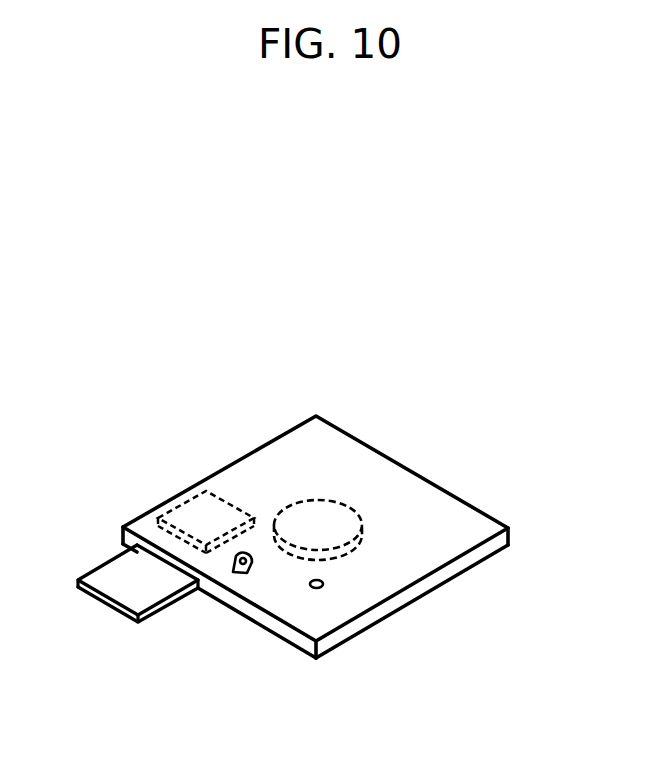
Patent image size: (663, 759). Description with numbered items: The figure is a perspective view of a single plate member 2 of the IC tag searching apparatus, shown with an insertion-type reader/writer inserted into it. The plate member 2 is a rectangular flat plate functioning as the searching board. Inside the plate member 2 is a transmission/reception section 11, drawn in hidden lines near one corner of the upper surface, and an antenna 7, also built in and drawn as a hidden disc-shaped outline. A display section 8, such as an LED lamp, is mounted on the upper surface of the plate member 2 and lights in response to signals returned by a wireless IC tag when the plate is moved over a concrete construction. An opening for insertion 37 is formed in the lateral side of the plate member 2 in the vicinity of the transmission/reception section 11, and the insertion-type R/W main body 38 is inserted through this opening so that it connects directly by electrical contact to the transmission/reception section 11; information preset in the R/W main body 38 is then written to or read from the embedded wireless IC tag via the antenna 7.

The flat plate member 2 is at (290, 453).
The transmission/reception section 11 is at (197, 515).
The antenna 7 is at (342, 530).
The display section 8 is at (322, 589).
The opening for insertion 37 is at (173, 566).
The insertion-type R/W main body 38 is at (122, 588).